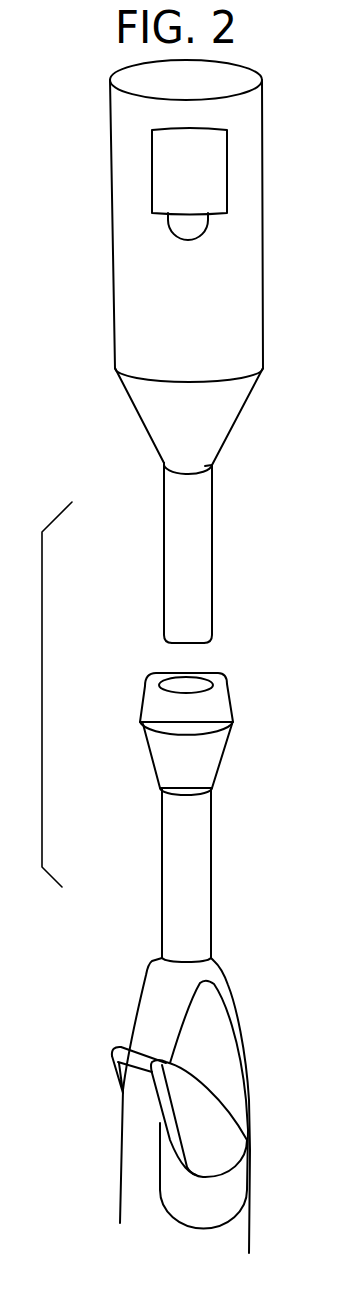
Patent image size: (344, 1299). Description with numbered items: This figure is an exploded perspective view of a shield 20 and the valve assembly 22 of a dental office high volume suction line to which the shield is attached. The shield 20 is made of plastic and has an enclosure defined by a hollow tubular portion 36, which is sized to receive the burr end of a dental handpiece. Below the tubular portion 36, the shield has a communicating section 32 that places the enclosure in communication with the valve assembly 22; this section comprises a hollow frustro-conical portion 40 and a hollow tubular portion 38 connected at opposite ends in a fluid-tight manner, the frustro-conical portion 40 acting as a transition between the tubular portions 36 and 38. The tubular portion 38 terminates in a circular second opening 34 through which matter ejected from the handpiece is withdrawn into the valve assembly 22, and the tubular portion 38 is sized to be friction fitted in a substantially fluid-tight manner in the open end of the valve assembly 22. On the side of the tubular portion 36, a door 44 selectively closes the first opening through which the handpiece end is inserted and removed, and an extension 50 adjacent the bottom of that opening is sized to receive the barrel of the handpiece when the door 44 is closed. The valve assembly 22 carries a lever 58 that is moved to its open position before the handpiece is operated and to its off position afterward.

The shield 20 is at (272, 277).
The valve assembly 22 is at (258, 1003).
The communicating section 32 is at (230, 456).
The second opening 34 is at (200, 645).
The hollow tubular portion 36 is at (135, 325).
The hollow tubular portion 38 is at (205, 554).
The hollow frustro-conical portion 40 is at (155, 430).
The door 44 is at (217, 177).
The extension 50 is at (190, 230).
The lever 58 is at (122, 1046).